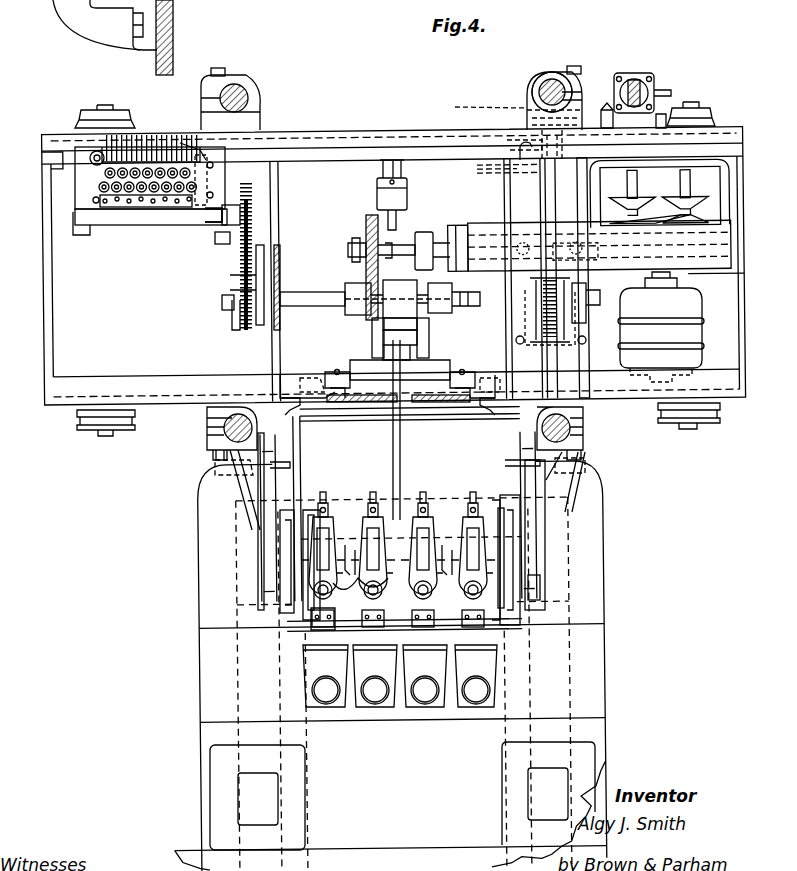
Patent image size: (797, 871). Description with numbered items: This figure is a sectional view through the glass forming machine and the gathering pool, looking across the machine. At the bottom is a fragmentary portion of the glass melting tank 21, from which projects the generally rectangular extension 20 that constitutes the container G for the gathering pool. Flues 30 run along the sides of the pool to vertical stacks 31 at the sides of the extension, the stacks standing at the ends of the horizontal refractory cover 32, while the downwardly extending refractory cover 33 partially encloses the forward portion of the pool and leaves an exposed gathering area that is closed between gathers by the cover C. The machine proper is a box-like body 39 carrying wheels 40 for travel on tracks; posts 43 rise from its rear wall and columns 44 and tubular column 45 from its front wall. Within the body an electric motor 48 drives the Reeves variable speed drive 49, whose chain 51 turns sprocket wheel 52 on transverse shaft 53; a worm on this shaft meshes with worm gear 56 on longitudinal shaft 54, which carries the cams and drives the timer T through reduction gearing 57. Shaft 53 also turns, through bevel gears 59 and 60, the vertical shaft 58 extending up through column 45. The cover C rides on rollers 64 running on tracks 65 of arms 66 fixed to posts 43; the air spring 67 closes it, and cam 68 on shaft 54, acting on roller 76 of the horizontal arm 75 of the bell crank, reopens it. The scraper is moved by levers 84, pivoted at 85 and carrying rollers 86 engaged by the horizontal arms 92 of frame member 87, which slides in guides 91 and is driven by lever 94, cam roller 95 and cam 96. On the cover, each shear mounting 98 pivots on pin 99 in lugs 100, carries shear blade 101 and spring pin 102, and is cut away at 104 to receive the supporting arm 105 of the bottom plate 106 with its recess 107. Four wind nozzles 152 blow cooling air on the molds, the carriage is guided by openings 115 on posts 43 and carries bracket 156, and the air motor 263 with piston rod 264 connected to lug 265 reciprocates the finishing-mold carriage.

The bracket 156 is at (56, 2).
The column 44 is at (250, 90).
The body 39 is at (46, 338).
The wheels 40 is at (92, 436).
The timer T is at (138, 215).
The reduction gearing 57 is at (220, 261).
The air spring 67 is at (377, 195).
The lug 265 is at (366, 221).
The piston rod 264 is at (408, 242).
The air motor 263 is at (486, 230).
The shaft 53 is at (558, 194).
The Reeves variable speed drive 49 is at (735, 186).
The vertical shaft 58 is at (550, 80).
The bevel gear 60 is at (540, 80).
The tubular column 45 is at (532, 100).
The bevel gear 59 is at (470, 103).
The sprocket wheel 52 is at (524, 146).
The chain 51 is at (583, 138).
The shaft 54 is at (300, 298).
The cam 68 is at (372, 332).
The roller 76 is at (368, 316).
The cam 96 is at (430, 323).
The cam roller 95 is at (430, 314).
The horizontal arm 75 is at (385, 366).
The lever 94 is at (425, 341).
The guides 91 is at (270, 383).
The worm gear 56 is at (555, 330).
The electric motor 48 is at (688, 336).
The posts 43 is at (224, 421).
The openings 115 is at (228, 433).
The horizontal arms 92 is at (300, 448).
The frame member 87 is at (362, 420).
The tracks 65 is at (265, 463).
The extension 20 is at (585, 577).
The container G is at (615, 538).
The cover C is at (300, 546).
The flues 30 is at (245, 602).
The arms 66 is at (245, 481).
The rollers 64 is at (268, 520).
The pivot 85 is at (295, 566).
The levers 84 is at (295, 586).
The rollers 86 is at (300, 506).
The shear mounting 98 is at (330, 516).
The pin 102 is at (370, 512).
The cut-away 104 is at (435, 514).
The recess 107 is at (471, 598).
The bottom plate 106 is at (420, 598).
The lugs 100 is at (346, 545).
The pin 99 is at (445, 545).
The supporting arm 105 is at (360, 594).
The shear blade 101 is at (323, 622).
The wind nozzles 152 is at (340, 688).
The refractory cover 33 is at (220, 667).
The horizontal refractory cover 32 is at (215, 735).
The vertical stacks 31 is at (220, 792).
The glass melting tank 21 is at (352, 860).